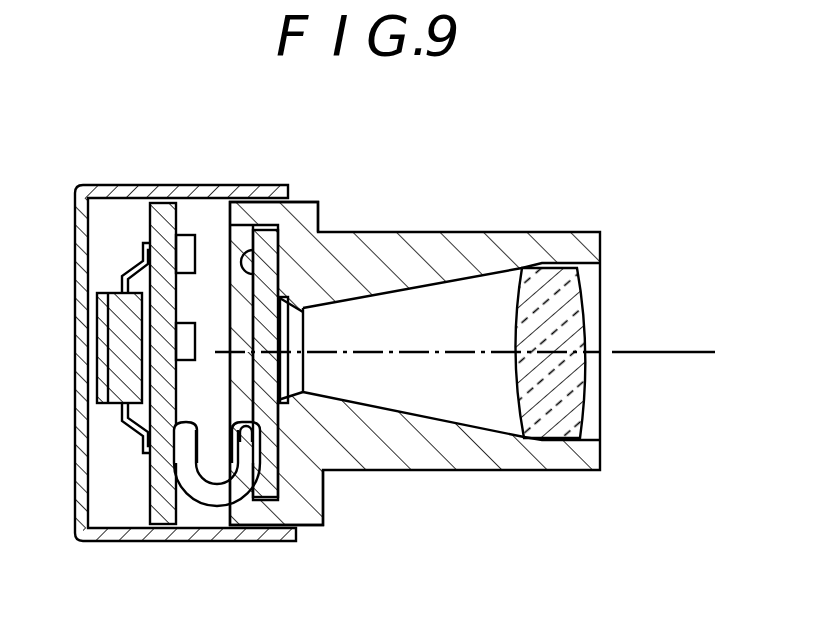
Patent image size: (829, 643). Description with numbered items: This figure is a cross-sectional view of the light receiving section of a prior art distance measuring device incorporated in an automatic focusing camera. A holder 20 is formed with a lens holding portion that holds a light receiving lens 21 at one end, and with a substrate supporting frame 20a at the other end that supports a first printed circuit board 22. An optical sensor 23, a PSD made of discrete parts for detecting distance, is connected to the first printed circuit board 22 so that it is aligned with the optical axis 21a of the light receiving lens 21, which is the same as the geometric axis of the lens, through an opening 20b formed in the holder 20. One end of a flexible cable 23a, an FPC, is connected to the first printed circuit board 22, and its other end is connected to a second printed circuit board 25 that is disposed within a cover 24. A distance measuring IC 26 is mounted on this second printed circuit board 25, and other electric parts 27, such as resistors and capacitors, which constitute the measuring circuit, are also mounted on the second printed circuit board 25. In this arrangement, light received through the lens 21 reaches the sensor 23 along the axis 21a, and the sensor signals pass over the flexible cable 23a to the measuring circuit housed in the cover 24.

The holder 20 is at (440, 461).
The substrate supporting frame 20a is at (267, 212).
The opening 20b is at (298, 339).
The light receiving lens 21 is at (560, 400).
The optical axis 21a is at (652, 352).
The first printed circuit board 22 is at (268, 247).
The optical sensor 23 is at (213, 498).
The flexible cable 23a is at (282, 385).
The cover 24 is at (122, 190).
The second printed circuit board 25 is at (160, 515).
The distance measuring IC 26 is at (117, 358).
The other electric parts 27 is at (185, 343).